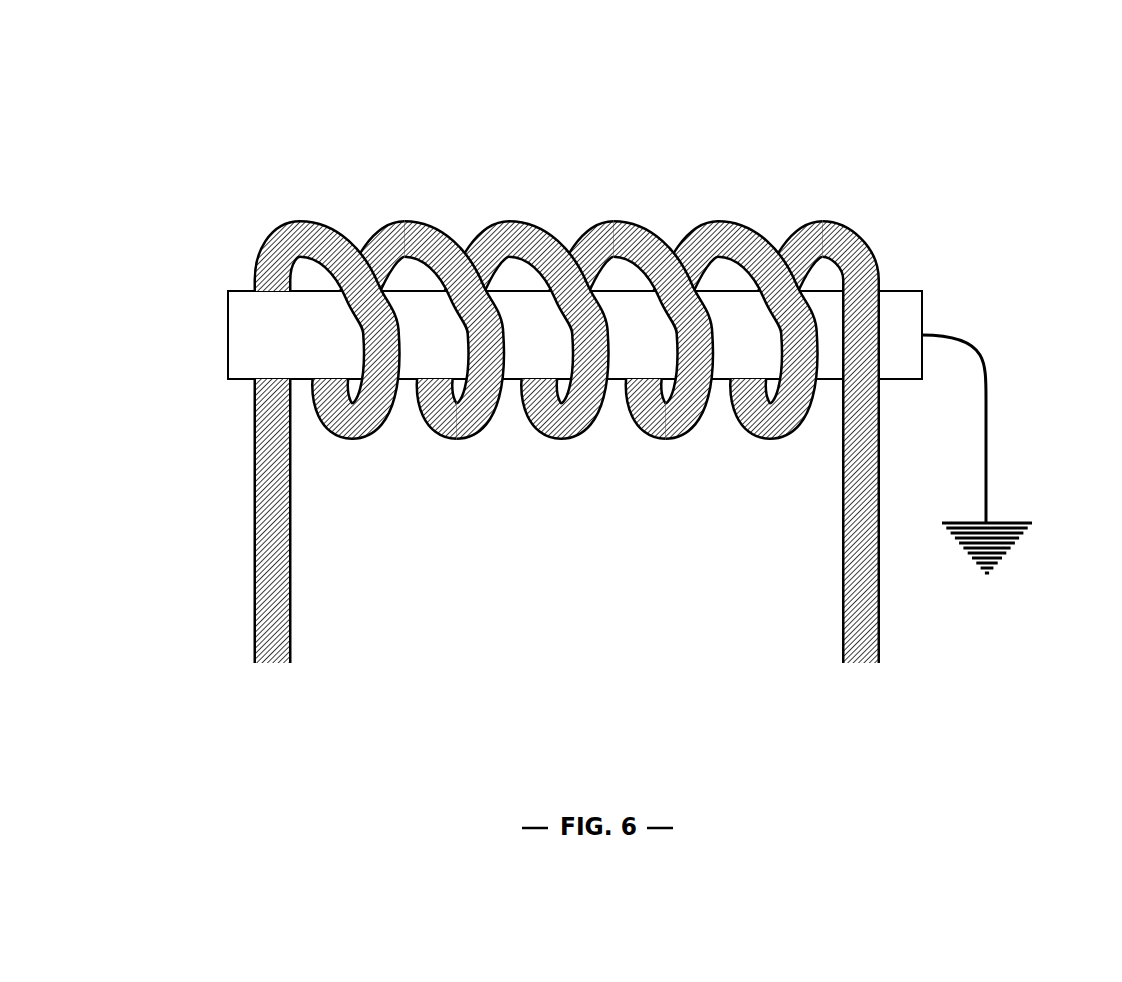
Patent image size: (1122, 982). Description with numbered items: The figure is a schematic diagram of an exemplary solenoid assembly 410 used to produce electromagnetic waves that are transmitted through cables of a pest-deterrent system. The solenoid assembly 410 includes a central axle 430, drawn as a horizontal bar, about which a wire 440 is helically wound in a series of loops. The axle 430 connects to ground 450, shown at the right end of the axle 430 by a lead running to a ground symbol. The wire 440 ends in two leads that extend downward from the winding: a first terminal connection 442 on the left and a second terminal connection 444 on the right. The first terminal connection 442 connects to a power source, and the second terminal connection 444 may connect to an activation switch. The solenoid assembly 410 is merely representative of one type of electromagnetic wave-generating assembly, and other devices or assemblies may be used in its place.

The solenoid assembly 410 is at (918, 165).
The central axle 430 is at (248, 342).
The wire 440 is at (400, 237).
The first terminal connection 442 is at (292, 597).
The second terminal connection 444 is at (840, 588).
The ground 450 is at (1005, 552).